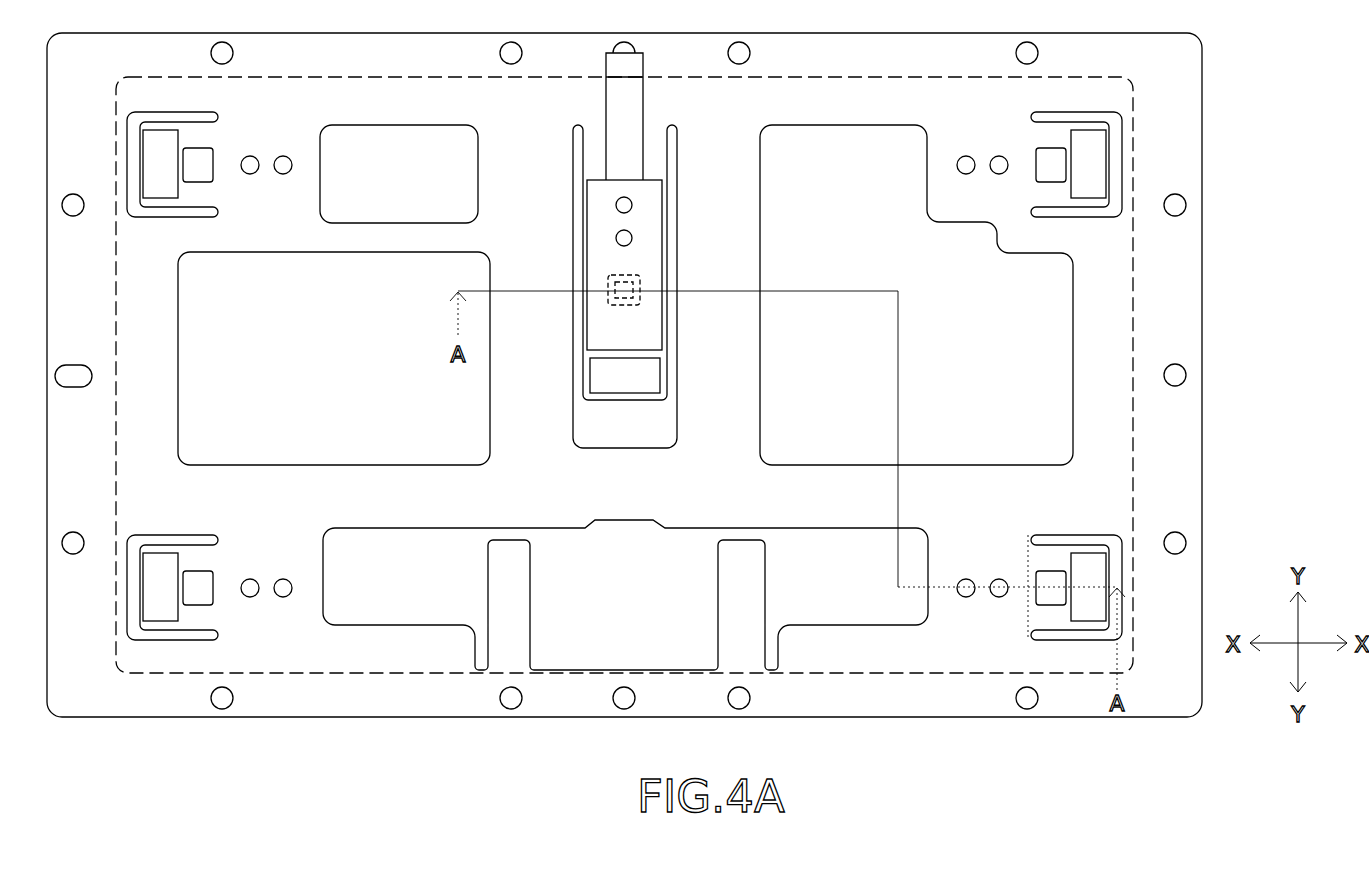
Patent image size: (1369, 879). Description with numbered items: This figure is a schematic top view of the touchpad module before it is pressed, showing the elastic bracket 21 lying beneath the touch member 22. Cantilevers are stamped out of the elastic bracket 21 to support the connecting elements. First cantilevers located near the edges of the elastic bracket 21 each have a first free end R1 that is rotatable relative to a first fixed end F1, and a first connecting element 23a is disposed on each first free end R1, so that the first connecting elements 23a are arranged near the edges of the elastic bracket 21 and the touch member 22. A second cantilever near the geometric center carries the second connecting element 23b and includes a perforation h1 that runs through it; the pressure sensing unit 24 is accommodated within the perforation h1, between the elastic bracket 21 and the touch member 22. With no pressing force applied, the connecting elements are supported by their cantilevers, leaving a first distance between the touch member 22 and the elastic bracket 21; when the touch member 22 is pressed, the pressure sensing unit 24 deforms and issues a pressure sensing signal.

The elastic bracket 21 is at (1202, 272).
The touch member 22 is at (1133, 215).
The first connecting element 23a is at (1088, 565).
The second connecting element 23b is at (605, 377).
The pressure sensing unit 24 is at (640, 297).
The perforation h1 is at (622, 275).
The first free end R1 is at (1115, 572).
The first fixed end F1 is at (1028, 605).